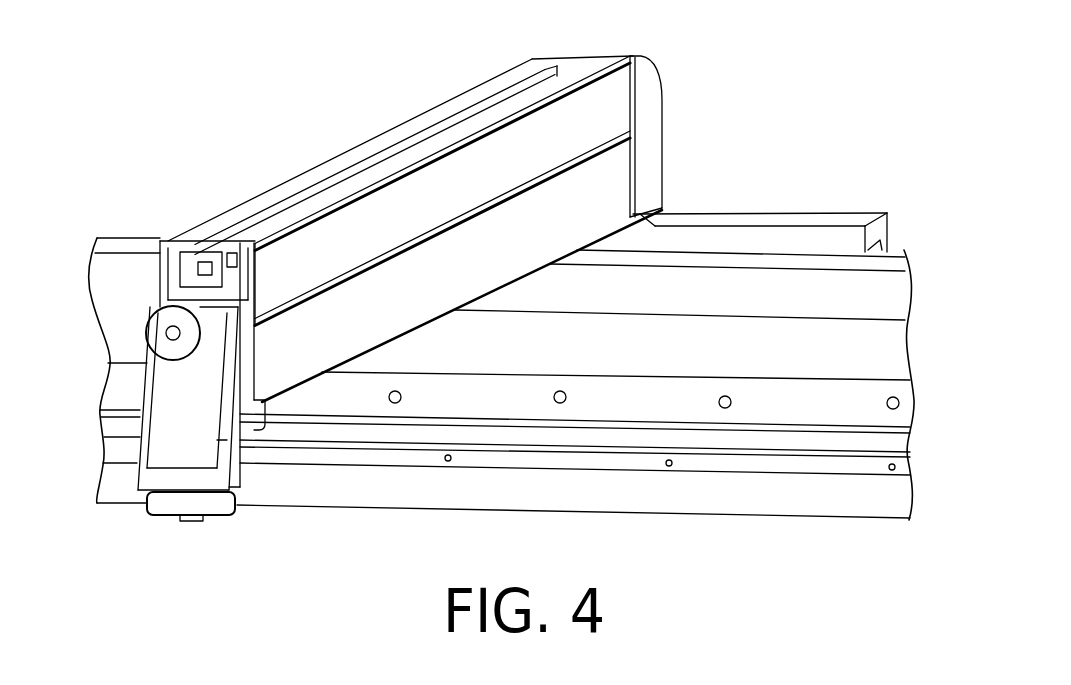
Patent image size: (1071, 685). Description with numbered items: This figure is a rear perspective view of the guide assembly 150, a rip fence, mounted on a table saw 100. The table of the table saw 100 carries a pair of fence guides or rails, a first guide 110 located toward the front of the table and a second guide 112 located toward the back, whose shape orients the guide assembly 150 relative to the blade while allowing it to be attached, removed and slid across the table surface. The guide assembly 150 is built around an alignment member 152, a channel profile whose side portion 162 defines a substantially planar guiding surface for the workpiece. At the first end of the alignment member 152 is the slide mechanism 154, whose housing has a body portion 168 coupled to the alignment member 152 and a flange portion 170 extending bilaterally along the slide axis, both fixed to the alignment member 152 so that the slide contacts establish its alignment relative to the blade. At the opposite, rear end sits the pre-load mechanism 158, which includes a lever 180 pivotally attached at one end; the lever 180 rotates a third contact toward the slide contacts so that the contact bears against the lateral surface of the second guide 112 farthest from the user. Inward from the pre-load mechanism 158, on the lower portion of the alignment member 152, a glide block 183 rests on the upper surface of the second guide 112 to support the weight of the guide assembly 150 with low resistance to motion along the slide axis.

The table saw 100 is at (148, 66).
The first guide 110 is at (918, 264).
The second guide 112 is at (930, 460).
The guide assembly 150 is at (343, 125).
The alignment member 152 is at (443, 98).
The slide mechanism 154 is at (702, 152).
The pre-load mechanism 158 is at (123, 467).
The side portion 162 is at (303, 350).
The body portion 168 is at (664, 98).
The flange portion 170 is at (860, 212).
The lever 180 is at (135, 390).
The glide block 183 is at (248, 428).